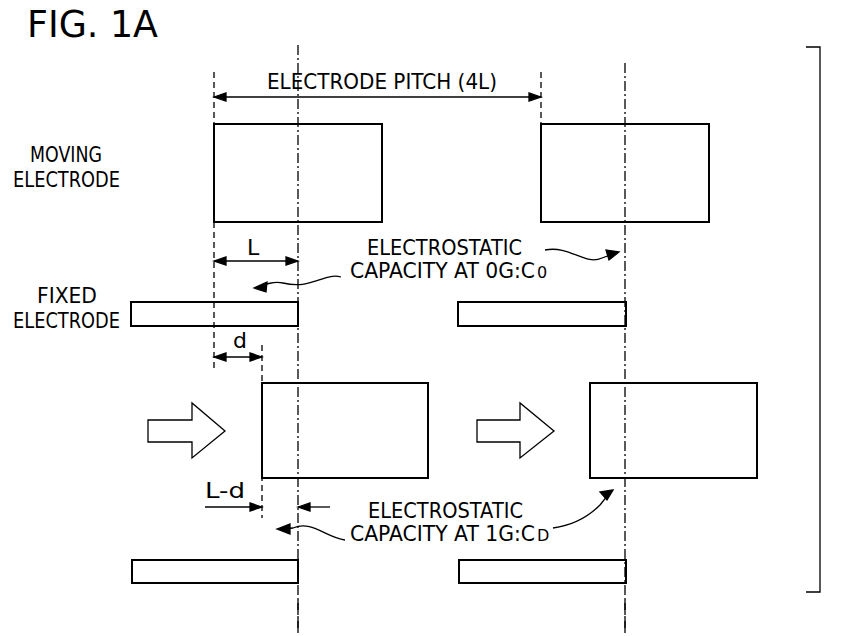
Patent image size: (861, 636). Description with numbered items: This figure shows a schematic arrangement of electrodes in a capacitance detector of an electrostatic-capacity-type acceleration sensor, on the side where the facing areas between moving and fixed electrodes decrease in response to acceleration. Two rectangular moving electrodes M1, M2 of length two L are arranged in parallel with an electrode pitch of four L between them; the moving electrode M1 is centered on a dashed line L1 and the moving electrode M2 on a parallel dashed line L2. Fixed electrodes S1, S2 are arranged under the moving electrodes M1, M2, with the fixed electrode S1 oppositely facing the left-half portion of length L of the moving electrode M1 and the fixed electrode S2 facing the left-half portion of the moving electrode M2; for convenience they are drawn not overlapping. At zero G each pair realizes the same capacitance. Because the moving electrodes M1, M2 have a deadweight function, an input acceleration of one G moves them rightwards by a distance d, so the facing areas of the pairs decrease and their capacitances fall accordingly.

The moving electrode M1 is at (382, 163).
The moving electrode M2 is at (709, 164).
The fixed electrode S1 is at (160, 560).
The fixed electrode S2 is at (459, 565).
The dashed line L1 is at (298, 628).
The dashed line L2 is at (626, 628).